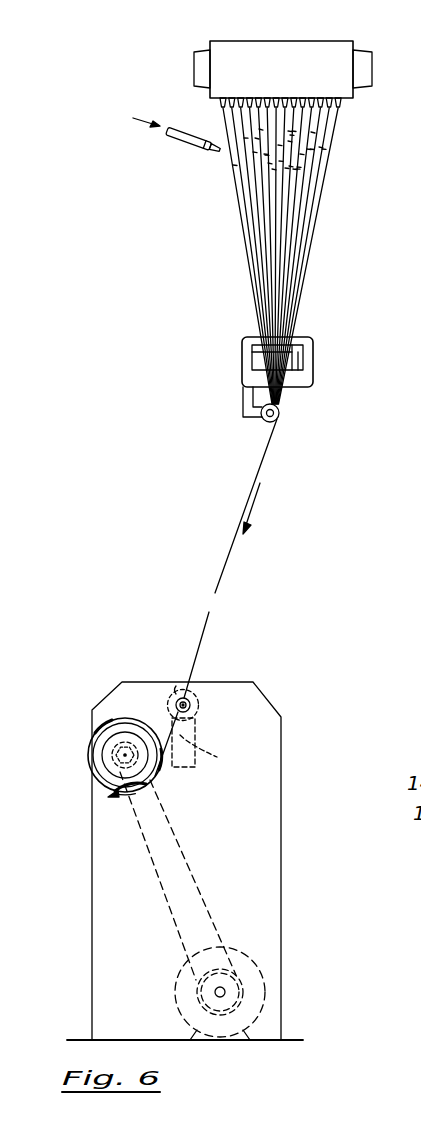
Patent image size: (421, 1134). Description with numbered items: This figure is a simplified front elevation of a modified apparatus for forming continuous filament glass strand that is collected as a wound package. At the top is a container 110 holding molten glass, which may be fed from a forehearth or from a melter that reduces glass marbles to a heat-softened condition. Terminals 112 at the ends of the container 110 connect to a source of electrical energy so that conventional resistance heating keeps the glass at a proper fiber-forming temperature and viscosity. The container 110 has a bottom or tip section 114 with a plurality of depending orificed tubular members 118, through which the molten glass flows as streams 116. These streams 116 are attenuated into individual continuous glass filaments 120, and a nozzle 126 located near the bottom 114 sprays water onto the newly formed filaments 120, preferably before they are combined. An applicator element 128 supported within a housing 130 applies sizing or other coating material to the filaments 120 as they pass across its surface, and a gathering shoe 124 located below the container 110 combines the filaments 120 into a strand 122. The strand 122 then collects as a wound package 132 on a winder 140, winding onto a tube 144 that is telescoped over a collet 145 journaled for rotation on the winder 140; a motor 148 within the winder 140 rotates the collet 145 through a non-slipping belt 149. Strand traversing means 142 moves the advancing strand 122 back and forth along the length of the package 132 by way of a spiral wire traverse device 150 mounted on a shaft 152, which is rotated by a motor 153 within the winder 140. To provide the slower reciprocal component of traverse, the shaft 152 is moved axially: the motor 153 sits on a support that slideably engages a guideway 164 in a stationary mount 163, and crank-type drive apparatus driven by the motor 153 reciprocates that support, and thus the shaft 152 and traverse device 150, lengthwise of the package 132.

The container 110 is at (226, 36).
The terminals 112 is at (194, 56).
The bottom or tip section 114 is at (215, 96).
The streams of molten glass 116 is at (319, 254).
The tubular members 118 is at (224, 100).
The continuous glass filaments 120 is at (268, 222).
The strand 122 is at (262, 460).
The gathering shoe 124 is at (262, 416).
The nozzle 126 is at (212, 148).
The yarn guide 128 is at (280, 357).
The housing 130 is at (253, 336).
The wound package 132 is at (103, 728).
The winder 140 is at (260, 680).
The strand traversing means 142 is at (196, 712).
The tube 144 is at (100, 740).
The collet 145 is at (104, 762).
The motor 148 is at (183, 972).
The non-slipping belt 149 is at (165, 903).
The spiral wire traverse device 150 is at (191, 705).
The shaft 152 is at (189, 699).
The motor 153 is at (181, 684).
The stationary mount 163 is at (195, 767).
The guideway 164 is at (211, 733).